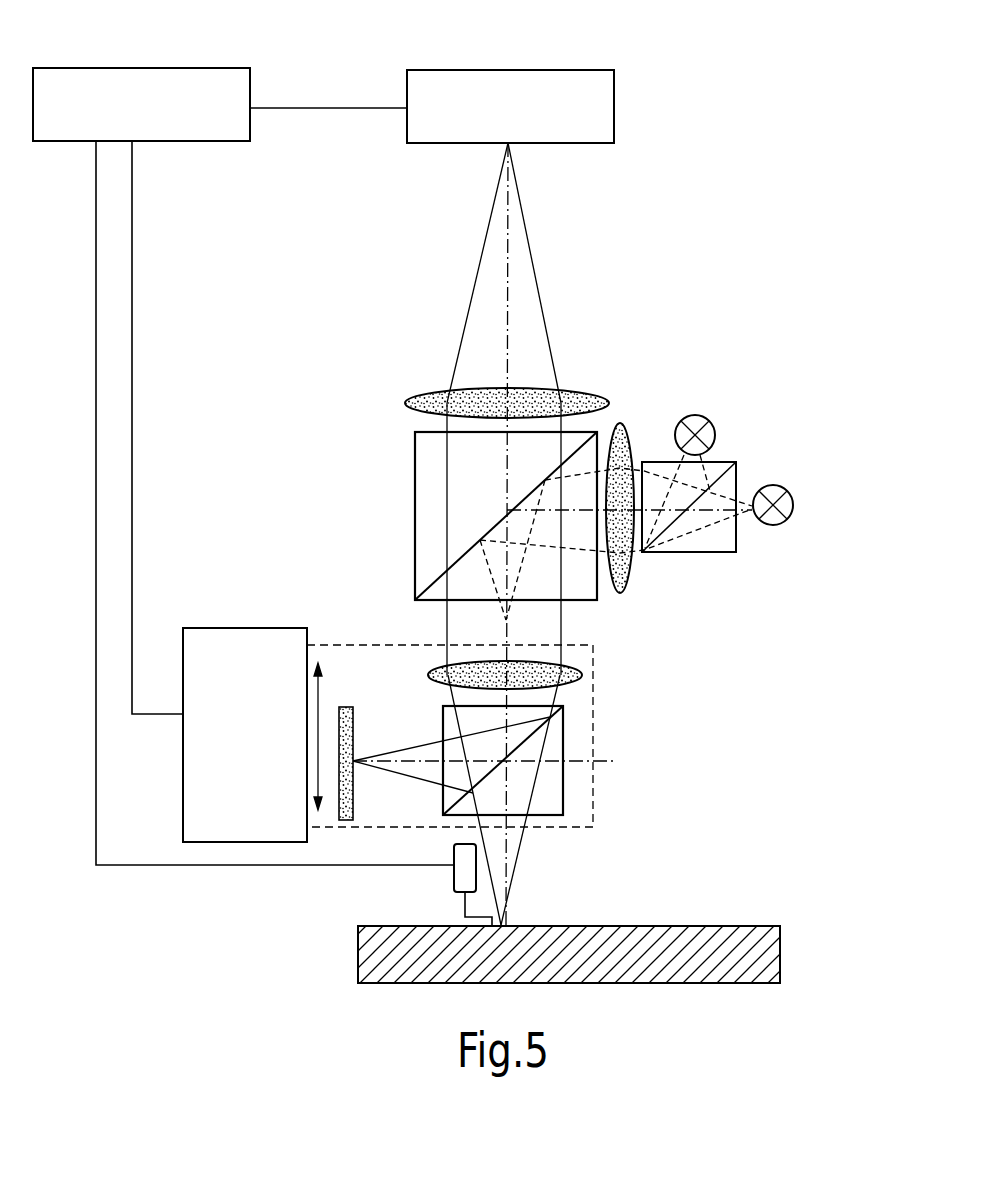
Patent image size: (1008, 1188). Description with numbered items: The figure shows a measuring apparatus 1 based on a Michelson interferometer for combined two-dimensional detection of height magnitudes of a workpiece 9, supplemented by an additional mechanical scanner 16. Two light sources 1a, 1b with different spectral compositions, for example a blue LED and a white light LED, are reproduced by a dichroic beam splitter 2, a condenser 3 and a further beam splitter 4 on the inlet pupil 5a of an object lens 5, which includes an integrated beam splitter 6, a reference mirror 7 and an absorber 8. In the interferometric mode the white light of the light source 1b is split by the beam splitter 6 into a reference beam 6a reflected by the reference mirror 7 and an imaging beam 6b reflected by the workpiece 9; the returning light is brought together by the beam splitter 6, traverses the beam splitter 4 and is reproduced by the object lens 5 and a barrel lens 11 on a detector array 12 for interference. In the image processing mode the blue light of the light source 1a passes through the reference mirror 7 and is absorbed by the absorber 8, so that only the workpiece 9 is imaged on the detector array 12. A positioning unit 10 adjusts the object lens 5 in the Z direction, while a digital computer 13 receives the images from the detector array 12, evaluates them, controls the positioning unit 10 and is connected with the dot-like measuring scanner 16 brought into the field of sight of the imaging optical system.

The apparatus 1 is at (786, 415).
The light source 1a is at (697, 417).
The light source 1b is at (793, 482).
The dichroic beam splitter 2 is at (700, 553).
The condenser 3 is at (625, 428).
The beam splitter 4 is at (417, 507).
The object lens 5 is at (577, 715).
The inlet pupil 5a is at (510, 622).
The beam splitter 6 is at (517, 748).
The reference beam 6a is at (398, 748).
The imaging beam 6b is at (447, 717).
The reference mirror 7 is at (352, 770).
The absorber 8 is at (337, 806).
The workpiece 9 is at (767, 953).
The positioning unit 10 is at (259, 744).
The barrel lens 11 is at (420, 395).
The detector array 12 is at (524, 129).
The digital computer 13 is at (147, 129).
The scanner 16 is at (454, 885).